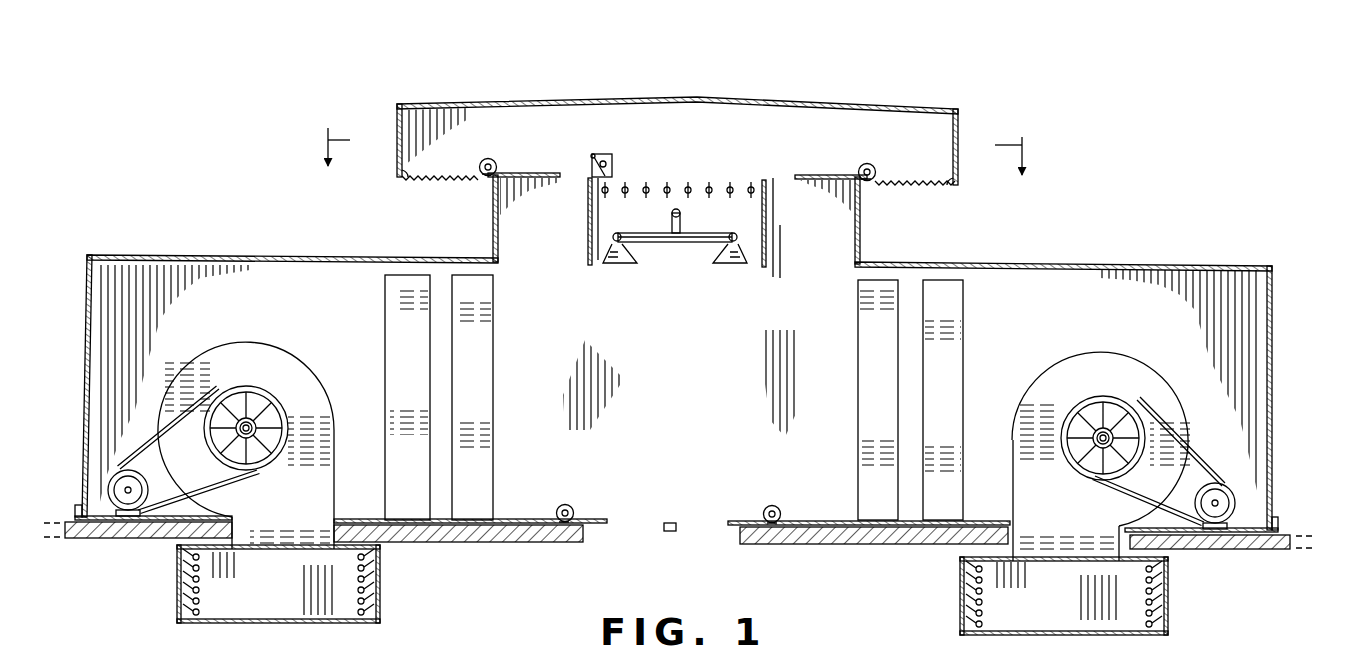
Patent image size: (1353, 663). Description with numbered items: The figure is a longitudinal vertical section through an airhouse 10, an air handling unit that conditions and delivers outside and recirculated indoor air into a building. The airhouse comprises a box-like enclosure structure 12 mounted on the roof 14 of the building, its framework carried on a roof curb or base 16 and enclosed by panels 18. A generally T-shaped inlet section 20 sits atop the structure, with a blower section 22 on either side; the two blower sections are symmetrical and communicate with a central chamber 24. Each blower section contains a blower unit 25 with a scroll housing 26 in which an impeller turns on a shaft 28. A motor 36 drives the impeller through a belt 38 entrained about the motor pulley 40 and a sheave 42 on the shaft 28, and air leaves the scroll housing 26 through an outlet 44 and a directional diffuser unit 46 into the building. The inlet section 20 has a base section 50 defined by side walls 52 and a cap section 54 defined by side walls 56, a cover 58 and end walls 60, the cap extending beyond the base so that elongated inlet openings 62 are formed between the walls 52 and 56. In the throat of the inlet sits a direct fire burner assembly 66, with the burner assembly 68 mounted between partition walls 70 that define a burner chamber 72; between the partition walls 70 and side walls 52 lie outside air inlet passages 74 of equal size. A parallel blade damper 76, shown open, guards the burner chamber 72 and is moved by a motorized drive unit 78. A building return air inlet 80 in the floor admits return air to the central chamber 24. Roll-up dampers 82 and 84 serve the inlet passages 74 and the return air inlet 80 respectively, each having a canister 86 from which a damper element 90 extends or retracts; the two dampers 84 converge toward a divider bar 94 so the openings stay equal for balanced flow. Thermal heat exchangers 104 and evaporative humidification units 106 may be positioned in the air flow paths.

The airhouse 10 is at (1180, 145).
The enclosure structure 12 is at (1218, 262).
The roof 14 is at (880, 546).
The roof curb or base 16 is at (1278, 532).
The panels 18 is at (128, 257).
The inlet section 20 is at (842, 110).
The blower section 22 is at (168, 329).
The central chamber 24 is at (656, 364).
The blower unit 25 is at (282, 330).
The scroll housing 26 is at (302, 366).
The shaft 28 is at (246, 426).
The motor 36 is at (108, 498).
The belt 38 is at (172, 442).
The pulley 40 is at (125, 470).
The sheave 42 is at (262, 442).
The outlet 44 is at (262, 558).
The directional diffuser unit 46 is at (178, 587).
The base section 50 is at (490, 205).
The side walls 52 is at (862, 237).
The cap section 54 is at (398, 130).
The side walls 56 is at (962, 125).
The cover 58 is at (700, 98).
The end walls 60 is at (404, 180).
The inlet openings 62 is at (420, 180).
The direct fire burner assembly 66 is at (690, 280).
The burner assembly 68 is at (657, 243).
The partition walls 70 is at (588, 266).
The burner chamber 72 is at (767, 232).
The outside air inlet passages 74 is at (520, 235).
The damper 76 is at (690, 182).
The motorized drive unit 78 is at (612, 158).
The building return air inlet 80 is at (712, 545).
The dampers 82 is at (498, 162).
The dampers 84 is at (568, 505).
The canister 86 is at (484, 160).
The damper element 90 is at (800, 175).
The divider bar 94 is at (670, 521).
The thermal heat exchangers 104 is at (493, 342).
The evaporative humidification units 106 is at (393, 350).